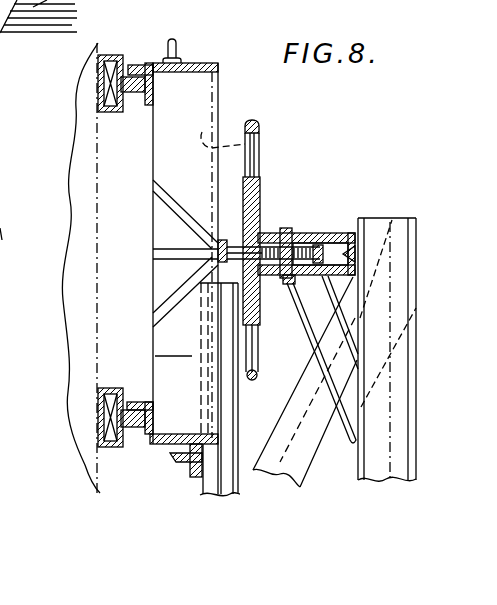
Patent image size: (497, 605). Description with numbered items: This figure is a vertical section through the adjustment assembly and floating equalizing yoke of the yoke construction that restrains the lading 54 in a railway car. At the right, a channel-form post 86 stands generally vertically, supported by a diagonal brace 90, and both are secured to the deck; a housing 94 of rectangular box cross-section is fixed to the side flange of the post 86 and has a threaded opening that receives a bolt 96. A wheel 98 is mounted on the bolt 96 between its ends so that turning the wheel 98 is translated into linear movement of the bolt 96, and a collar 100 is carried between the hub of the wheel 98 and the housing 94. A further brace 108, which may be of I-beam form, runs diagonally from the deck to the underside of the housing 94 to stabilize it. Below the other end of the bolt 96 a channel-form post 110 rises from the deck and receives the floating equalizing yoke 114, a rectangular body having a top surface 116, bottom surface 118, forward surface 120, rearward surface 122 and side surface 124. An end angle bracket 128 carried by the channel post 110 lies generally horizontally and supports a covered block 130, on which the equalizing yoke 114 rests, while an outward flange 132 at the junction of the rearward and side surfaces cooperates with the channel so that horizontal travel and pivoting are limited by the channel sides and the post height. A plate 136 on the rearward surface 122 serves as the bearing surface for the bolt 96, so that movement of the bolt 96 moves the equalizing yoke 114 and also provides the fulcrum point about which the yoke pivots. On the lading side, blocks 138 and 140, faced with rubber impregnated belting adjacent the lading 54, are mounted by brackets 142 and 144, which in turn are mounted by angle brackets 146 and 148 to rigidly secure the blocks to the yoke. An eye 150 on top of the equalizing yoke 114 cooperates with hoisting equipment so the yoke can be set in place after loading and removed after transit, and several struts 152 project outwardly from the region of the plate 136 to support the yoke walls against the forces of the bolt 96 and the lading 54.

The lading 54 is at (87, 327).
The post 86 is at (398, 308).
The brace 90 is at (280, 470).
The housing 94 is at (325, 233).
The bolt 96 is at (253, 252).
The wheel 98 is at (253, 160).
The collar 100 is at (290, 278).
The brace 108 is at (315, 313).
The post 110 is at (193, 493).
The equalizing yoke 114 is at (190, 98).
The top surface 116 is at (190, 63).
The bottom surface 118 is at (167, 444).
The forward surface 120 is at (152, 153).
The rearward surface 122 is at (220, 108).
The side surface 124 is at (173, 344).
The end angle bracket 128 is at (188, 472).
The block 130 is at (200, 445).
The outward flange 132 is at (262, 132).
The plate 136 is at (222, 240).
The block 138 is at (100, 87).
The block 140 is at (100, 417).
The bracket 142 is at (128, 65).
The bracket 144 is at (128, 400).
The angle bracket 146 is at (147, 97).
The angle bracket 148 is at (147, 440).
The eye 150 is at (173, 36).
The strut 152 is at (173, 200).